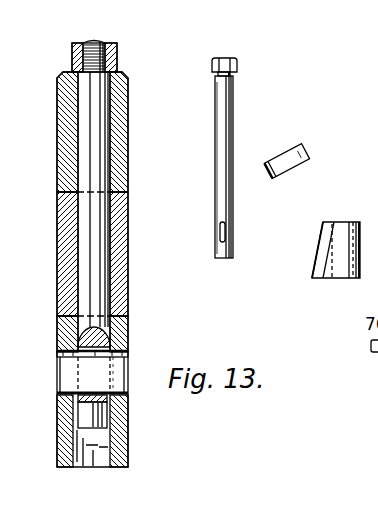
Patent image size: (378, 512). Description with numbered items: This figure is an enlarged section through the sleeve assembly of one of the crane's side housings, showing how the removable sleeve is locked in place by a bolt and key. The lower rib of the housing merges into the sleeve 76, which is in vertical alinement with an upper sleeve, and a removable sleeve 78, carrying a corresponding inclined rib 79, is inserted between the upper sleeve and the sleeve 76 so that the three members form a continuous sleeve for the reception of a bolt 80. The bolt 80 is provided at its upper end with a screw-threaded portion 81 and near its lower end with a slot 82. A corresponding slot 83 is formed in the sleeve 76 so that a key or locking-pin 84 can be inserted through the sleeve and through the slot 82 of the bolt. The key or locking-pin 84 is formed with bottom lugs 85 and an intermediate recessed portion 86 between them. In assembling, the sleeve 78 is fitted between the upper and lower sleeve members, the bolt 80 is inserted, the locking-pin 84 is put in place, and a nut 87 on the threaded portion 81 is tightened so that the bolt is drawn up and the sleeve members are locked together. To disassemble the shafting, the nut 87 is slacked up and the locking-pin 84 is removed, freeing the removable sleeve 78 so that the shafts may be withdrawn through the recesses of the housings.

The sleeve 76 is at (58, 421).
The removable sleeve 78 is at (330, 262).
The inclined rib 79 is at (320, 243).
The bolt 80 is at (92, 153).
The screw-threaded portion 81 is at (108, 46).
The slot 82 is at (114, 347).
The slot 83 is at (128, 354).
The key or locking-pin 84 is at (170, 380).
The bottom lugs 85 is at (58, 392).
The intermediate recessed portion 86 is at (110, 402).
The nut 87 is at (118, 60).